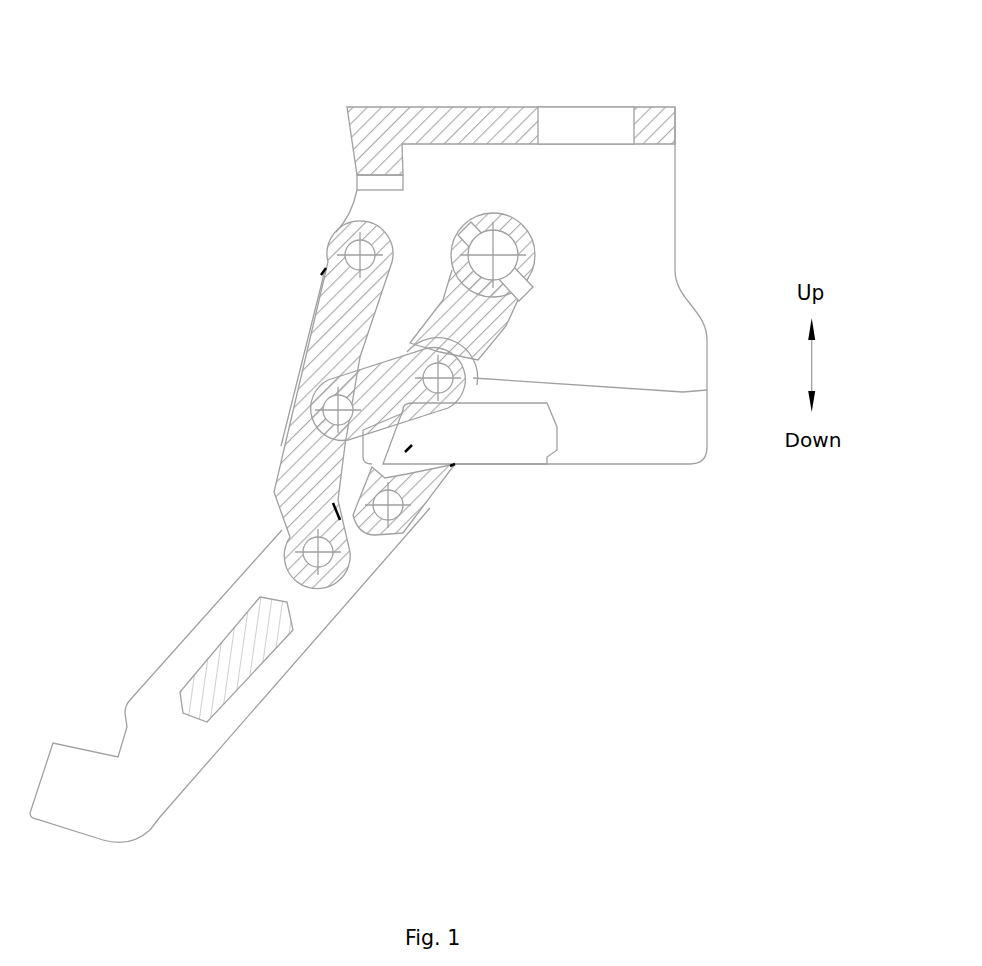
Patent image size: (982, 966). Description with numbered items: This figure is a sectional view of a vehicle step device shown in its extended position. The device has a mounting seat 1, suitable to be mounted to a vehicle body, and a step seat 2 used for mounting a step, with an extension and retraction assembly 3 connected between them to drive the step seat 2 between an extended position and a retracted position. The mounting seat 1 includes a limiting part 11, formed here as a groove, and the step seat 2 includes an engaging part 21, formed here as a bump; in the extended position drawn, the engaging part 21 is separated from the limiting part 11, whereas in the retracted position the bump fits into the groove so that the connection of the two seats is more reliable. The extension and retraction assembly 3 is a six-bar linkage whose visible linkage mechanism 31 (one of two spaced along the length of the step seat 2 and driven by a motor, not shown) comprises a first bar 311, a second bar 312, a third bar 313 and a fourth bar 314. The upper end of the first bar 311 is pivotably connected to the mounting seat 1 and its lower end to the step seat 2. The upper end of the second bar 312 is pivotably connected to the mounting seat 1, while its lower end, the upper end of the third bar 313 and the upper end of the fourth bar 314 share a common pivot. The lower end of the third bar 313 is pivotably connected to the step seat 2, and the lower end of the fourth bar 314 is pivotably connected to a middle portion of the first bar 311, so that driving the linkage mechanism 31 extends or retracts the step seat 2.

The mounting seat 1 is at (478, 165).
The limiting part 11 is at (495, 432).
The step seat 2 is at (180, 768).
The engaging part 21 is at (228, 665).
The extension and retraction assembly 3 is at (275, 405).
The linkage mechanism 31 is at (322, 277).
The first bar 311 is at (297, 480).
The second bar 312 is at (535, 250).
The third bar 313 is at (413, 500).
The fourth bar 314 is at (387, 392).